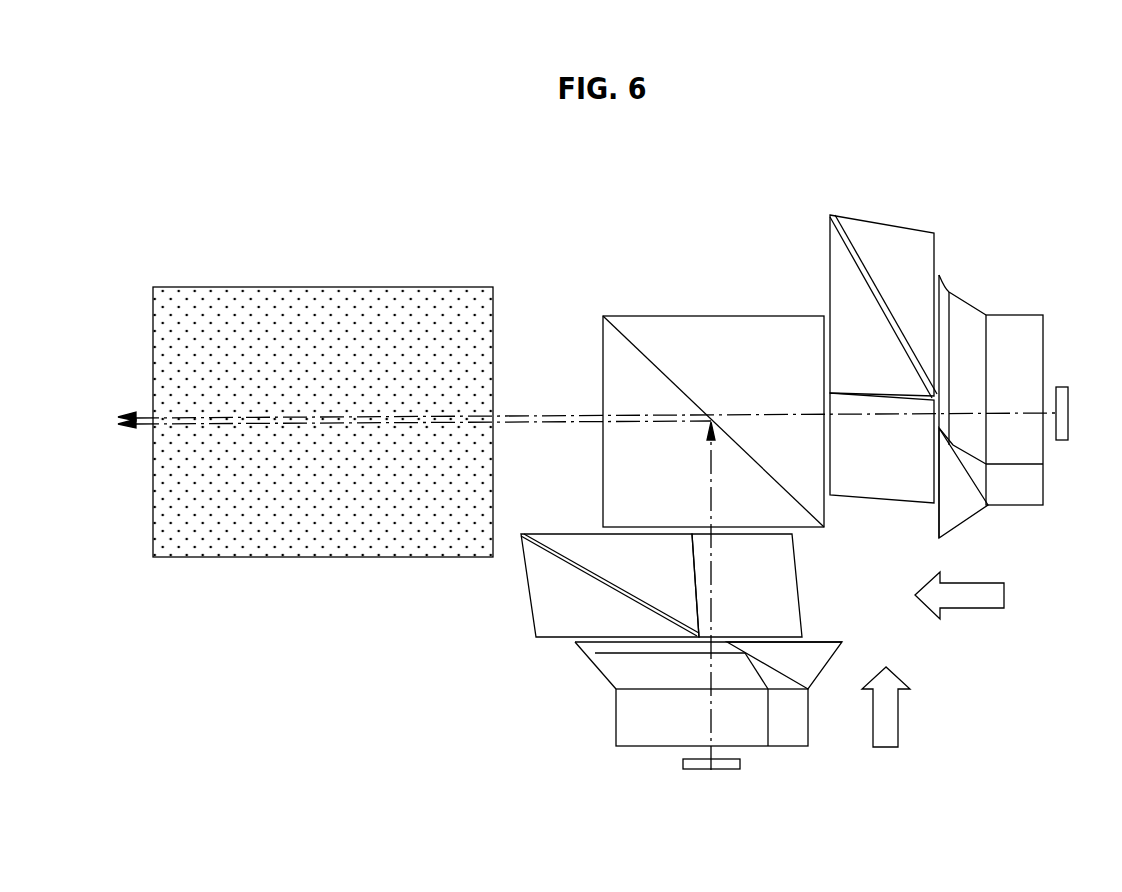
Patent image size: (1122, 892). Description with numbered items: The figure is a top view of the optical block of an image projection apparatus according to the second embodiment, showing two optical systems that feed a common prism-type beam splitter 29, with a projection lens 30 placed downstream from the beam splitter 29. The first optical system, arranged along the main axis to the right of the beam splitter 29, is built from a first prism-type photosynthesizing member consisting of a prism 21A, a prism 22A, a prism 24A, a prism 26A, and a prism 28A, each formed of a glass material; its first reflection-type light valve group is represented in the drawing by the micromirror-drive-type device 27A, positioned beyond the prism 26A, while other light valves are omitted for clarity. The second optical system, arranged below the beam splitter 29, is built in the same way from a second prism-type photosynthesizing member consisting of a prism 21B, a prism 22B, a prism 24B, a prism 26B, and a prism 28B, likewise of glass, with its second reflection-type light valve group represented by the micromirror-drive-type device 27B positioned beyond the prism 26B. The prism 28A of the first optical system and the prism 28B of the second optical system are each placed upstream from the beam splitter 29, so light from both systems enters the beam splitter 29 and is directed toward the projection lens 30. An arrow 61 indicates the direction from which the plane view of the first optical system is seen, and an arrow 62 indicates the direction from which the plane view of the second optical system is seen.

The projection lens 30 is at (343, 287).
The prism-type beam splitter 29 is at (711, 316).
The prism 21A is at (882, 222).
The prism 28A is at (890, 502).
The prism 24A is at (968, 305).
The prism 26A is at (1012, 315).
The micromirror-drive-type device 27A is at (1068, 413).
The prism 22A is at (978, 513).
The arrow 61 is at (971, 583).
The arrow 62 is at (898, 720).
The prism 21B is at (527, 583).
The prism 28B is at (800, 583).
The prism 22B is at (833, 655).
The prism 24B is at (607, 670).
The prism 26B is at (616, 716).
The micromirror-drive-type device 27B is at (697, 770).